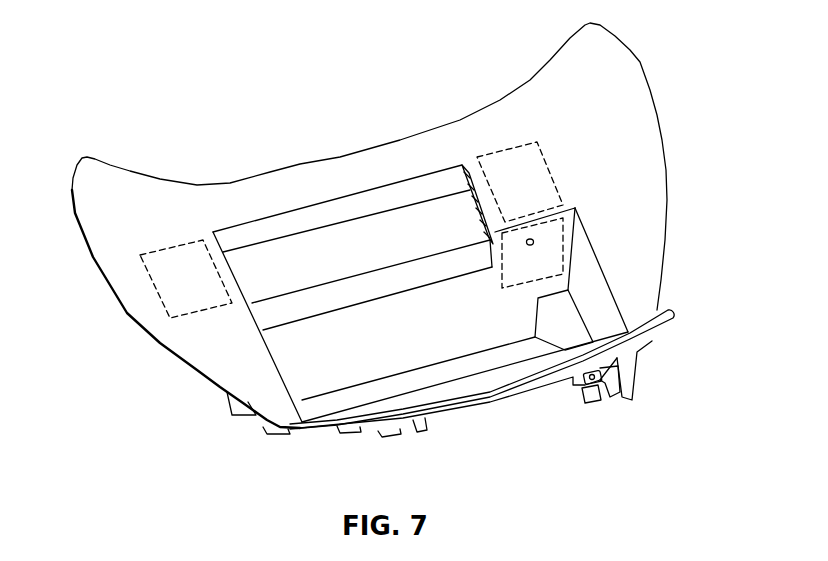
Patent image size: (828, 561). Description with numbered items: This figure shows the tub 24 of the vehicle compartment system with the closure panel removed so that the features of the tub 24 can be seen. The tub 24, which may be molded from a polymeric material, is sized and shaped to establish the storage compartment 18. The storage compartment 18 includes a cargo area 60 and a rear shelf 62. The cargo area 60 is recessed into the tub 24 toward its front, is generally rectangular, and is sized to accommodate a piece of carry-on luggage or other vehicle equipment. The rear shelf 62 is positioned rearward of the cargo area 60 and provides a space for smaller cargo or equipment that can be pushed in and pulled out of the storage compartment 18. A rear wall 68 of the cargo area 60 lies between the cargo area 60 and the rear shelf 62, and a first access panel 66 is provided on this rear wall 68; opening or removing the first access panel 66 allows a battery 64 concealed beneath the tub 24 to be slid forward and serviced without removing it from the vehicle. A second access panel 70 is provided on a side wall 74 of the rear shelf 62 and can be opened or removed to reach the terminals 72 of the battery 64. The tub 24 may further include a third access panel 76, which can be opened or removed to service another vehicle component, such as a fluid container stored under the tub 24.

The storage compartment 18 is at (314, 362).
The tub 24 is at (280, 170).
The cargo area 60 is at (455, 370).
The rear shelf 62 is at (312, 247).
The battery 64 is at (549, 160).
The first access panel 66 is at (519, 286).
The rear wall 68 is at (399, 358).
The second access panel 70 is at (475, 158).
The terminals 72 is at (487, 241).
The side wall 74 is at (487, 252).
The third access panel 76 is at (155, 243).